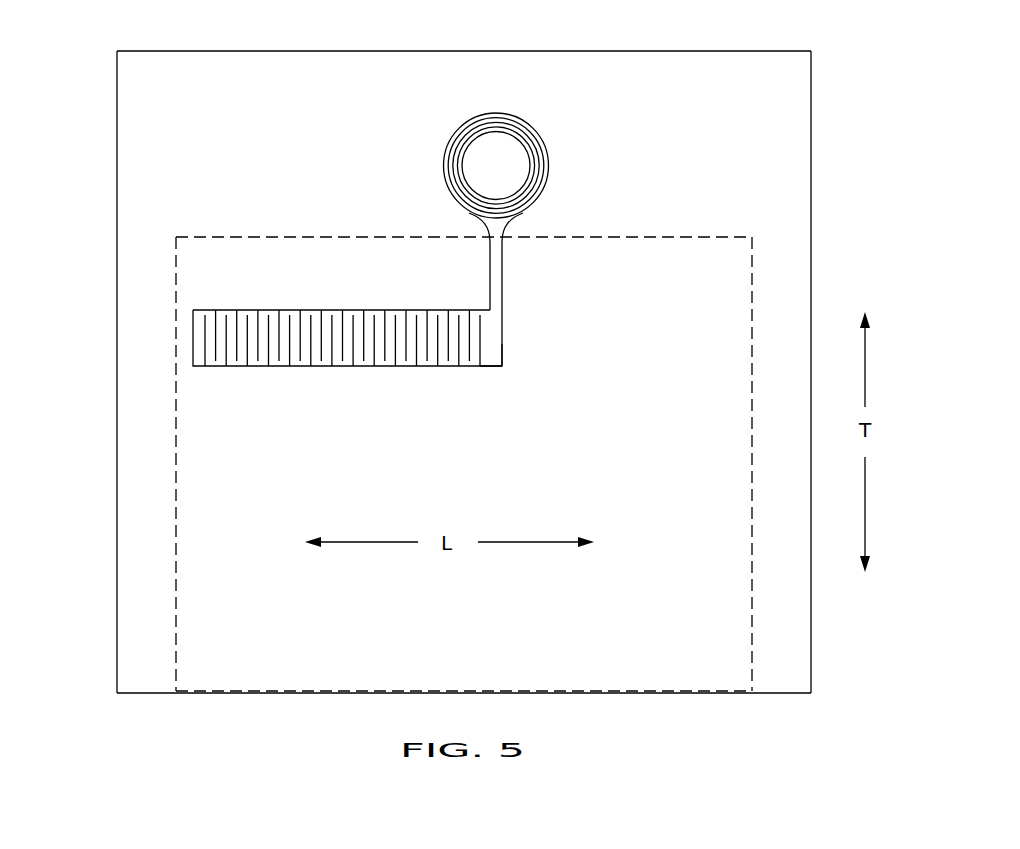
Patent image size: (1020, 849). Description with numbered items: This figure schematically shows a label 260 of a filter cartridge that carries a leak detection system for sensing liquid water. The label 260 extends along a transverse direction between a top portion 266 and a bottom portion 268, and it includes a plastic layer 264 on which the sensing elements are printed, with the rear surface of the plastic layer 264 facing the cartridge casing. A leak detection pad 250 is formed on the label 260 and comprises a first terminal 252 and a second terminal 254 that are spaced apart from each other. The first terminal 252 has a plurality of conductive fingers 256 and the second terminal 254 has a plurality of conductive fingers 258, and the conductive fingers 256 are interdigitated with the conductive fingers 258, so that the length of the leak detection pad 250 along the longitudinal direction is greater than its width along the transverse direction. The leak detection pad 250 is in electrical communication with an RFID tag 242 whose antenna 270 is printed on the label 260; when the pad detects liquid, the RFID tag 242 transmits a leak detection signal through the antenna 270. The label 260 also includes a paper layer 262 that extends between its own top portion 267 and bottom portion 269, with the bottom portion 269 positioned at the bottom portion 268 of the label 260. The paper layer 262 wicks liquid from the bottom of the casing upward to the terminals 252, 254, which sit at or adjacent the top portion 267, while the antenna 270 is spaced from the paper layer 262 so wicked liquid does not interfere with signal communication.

The RFID tag 242 is at (485, 155).
The leak detection pad 250 is at (396, 266).
The first terminal 252 is at (297, 311).
The second terminal 254 is at (276, 368).
The conductive fingers of first terminal 256 is at (403, 296).
The conductive fingers of second terminal 258 is at (493, 385).
The label 260 is at (117, 163).
The paper layer 262 is at (174, 470).
The plastic layer 264 is at (798, 262).
The top portion of label 266 is at (825, 51).
The top portion of paper layer 267 is at (162, 237).
The bottom portion of label 268 is at (825, 691).
The bottom portion of paper layer 269 is at (162, 684).
The antenna 270 is at (545, 163).